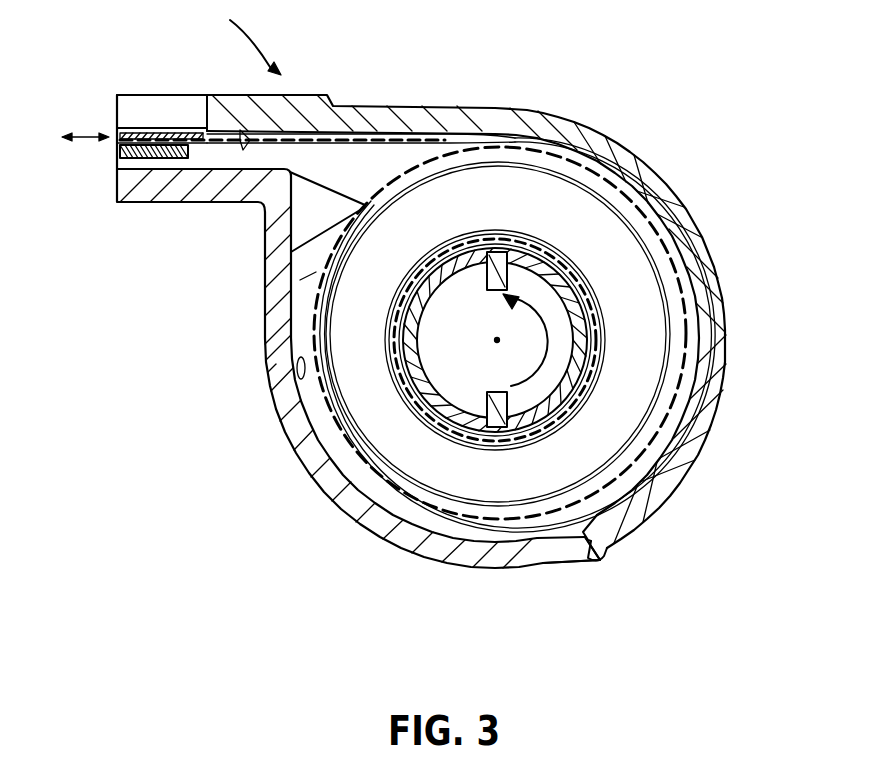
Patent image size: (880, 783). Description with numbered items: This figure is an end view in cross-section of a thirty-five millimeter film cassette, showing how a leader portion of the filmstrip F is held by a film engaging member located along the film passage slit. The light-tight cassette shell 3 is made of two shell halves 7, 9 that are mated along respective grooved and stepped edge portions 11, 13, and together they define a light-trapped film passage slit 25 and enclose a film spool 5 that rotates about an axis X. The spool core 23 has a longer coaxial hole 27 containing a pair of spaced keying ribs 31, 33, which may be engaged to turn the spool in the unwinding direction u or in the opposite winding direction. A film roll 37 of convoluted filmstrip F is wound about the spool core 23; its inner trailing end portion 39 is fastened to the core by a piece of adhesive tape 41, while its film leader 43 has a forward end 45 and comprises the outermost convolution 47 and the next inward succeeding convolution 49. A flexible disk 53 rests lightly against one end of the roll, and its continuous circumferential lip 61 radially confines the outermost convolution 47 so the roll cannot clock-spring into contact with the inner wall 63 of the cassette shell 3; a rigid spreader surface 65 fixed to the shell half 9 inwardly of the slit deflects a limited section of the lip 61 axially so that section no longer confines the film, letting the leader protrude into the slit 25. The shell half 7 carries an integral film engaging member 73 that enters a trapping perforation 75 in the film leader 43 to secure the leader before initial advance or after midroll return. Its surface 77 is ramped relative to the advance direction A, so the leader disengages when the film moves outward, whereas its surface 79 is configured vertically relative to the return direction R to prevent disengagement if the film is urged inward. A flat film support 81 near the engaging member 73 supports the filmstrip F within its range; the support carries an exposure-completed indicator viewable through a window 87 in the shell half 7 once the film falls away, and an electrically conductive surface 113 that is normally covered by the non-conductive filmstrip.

The cassette shell 3 is at (690, 475).
The film spool 5 is at (692, 358).
The shell half 7 is at (462, 104).
The shell half 9 is at (507, 570).
The grooved and stepped edge portion 11 is at (597, 560).
The grooved and stepped edge portion 13 is at (590, 537).
The spool core 23 is at (590, 345).
The film passage slit 25 is at (172, 168).
The longer coaxial hole 27 is at (560, 305).
The keying rib 31 is at (487, 283).
The keying rib 33 is at (488, 400).
The film roll 37 is at (330, 455).
The trailing end portion 39 is at (392, 372).
The adhesive tape 41 is at (396, 340).
The film leader 43 is at (418, 140).
The forward end 45 is at (140, 128).
The outermost convolution 47 is at (623, 187).
The next inward succeeding convolution 49 is at (643, 222).
The flexible disk 53 is at (310, 276).
The circumferential lip 61 is at (268, 350).
The inner wall 63 is at (272, 360).
The spreader surface 65 is at (318, 205).
The film engaging member 73 is at (212, 148).
The trapping perforation 75 is at (212, 128).
The ramped surface 77 is at (240, 130).
The vertical surface 79 is at (198, 130).
The film support 81 is at (117, 150).
The window 87 is at (162, 105).
The electrically conductive surface 113 is at (163, 123).
The filmstrip F is at (592, 170).
The return direction R is at (100, 132).
The advance direction A is at (70, 143).
The axis X is at (495, 340).
The unwinding direction u is at (545, 318).